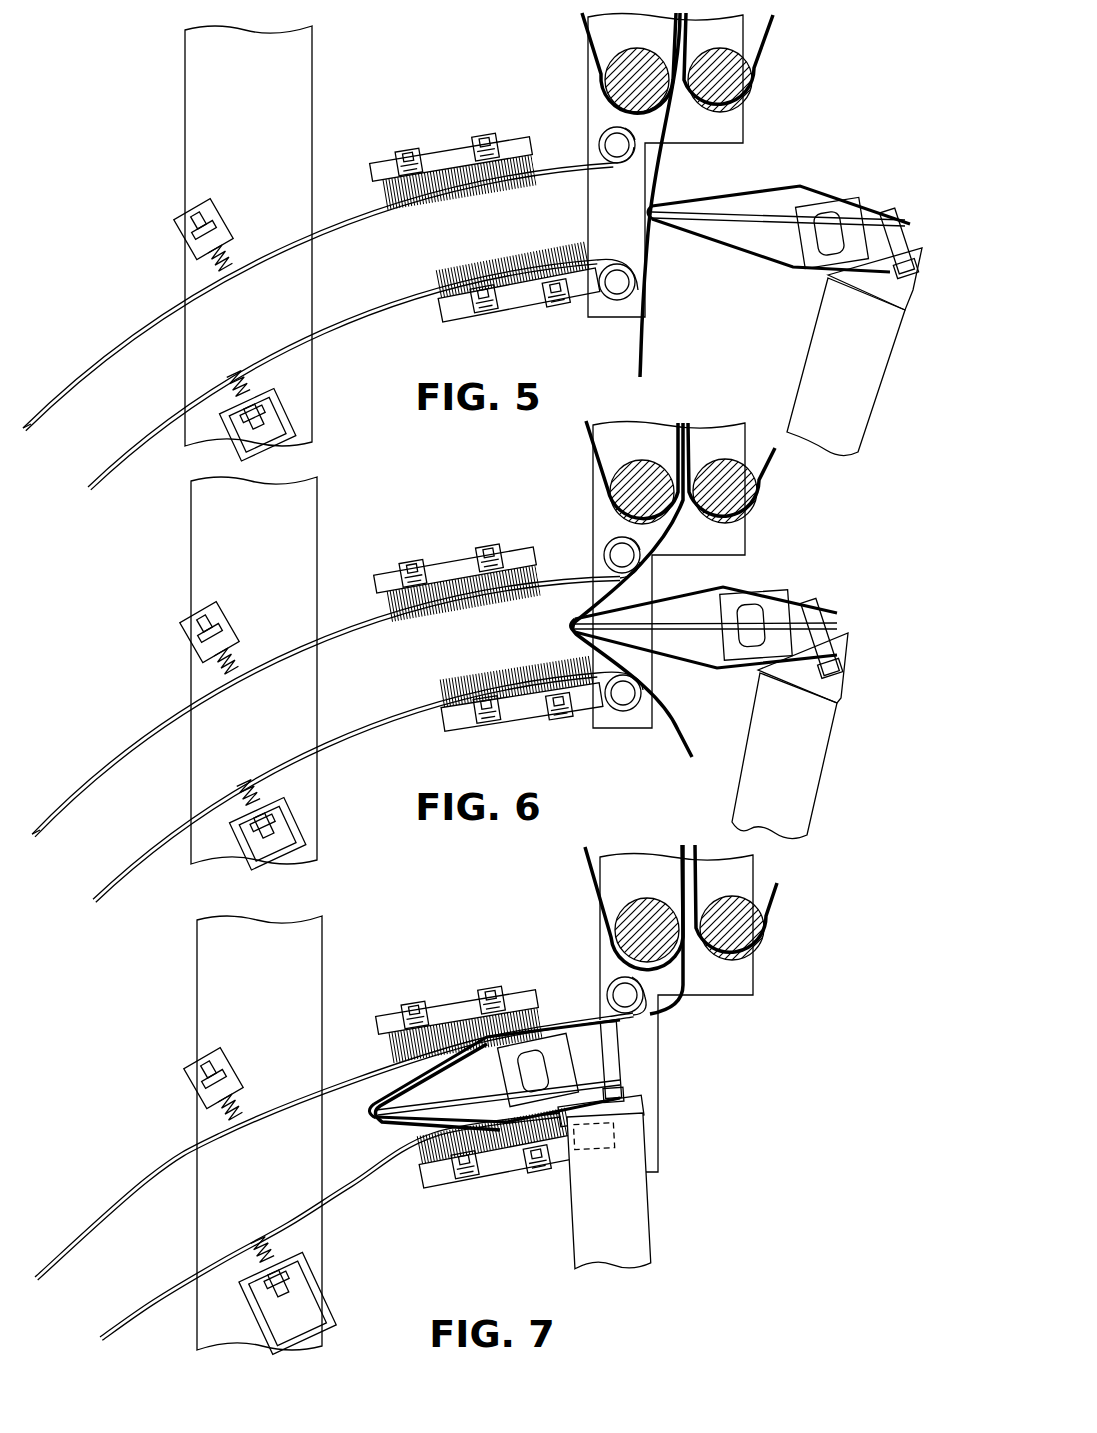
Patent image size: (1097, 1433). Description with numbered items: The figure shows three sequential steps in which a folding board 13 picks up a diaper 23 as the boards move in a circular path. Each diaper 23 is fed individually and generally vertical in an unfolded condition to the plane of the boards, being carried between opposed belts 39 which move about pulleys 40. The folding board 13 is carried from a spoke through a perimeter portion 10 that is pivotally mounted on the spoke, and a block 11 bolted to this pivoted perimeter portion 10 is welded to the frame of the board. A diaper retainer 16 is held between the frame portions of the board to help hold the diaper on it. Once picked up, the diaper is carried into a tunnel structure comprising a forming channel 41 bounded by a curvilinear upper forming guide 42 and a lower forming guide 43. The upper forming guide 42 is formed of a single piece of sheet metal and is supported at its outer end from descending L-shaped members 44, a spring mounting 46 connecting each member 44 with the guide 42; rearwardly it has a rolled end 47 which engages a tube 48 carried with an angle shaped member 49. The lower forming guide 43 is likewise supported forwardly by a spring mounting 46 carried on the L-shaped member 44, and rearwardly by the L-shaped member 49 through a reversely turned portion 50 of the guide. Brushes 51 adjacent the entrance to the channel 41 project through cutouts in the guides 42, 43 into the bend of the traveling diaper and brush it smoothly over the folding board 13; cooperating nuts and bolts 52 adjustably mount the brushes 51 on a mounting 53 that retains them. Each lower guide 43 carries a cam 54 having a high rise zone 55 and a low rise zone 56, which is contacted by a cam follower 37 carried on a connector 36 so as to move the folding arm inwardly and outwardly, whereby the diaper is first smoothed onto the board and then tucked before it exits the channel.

In FIG. 5, the perimeter portion 10 is at (825, 384).
In FIG. 6, the perimeter portion 10 is at (768, 771).
In FIG. 7, the perimeter portion 10 is at (591, 1231).
In FIG. 5, the block 11 is at (907, 275).
In FIG. 5, the folding board 13 is at (822, 182).
In FIG. 6, the folding board 13 is at (704, 627).
In FIG. 7, the folding board 13 is at (496, 1071).
In FIG. 5, the diaper retainer 16 is at (730, 227).
In FIG. 5, the diaper 23 is at (645, 330).
In FIG. 6, the diaper 23 is at (673, 728).
In FIG. 7, the diaper 23 is at (373, 1097).
In FIG. 6, the connector 36 is at (840, 625).
In FIG. 6, the cam follower 37 is at (833, 673).
In FIG. 7, the cam follower 37 is at (625, 1088).
In FIG. 5, the belts 39 is at (590, 32).
In FIG. 6, the belts 39 is at (680, 470).
In FIG. 7, the belts 39 is at (780, 902).
In FIG. 5, the pulleys 40 is at (620, 62).
In FIG. 6, the pulleys 40 is at (740, 510).
In FIG. 7, the pulleys 40 is at (740, 952).
In FIG. 5, the forming channel 41 is at (144, 397).
In FIG. 6, the forming channel 41 is at (75, 840).
In FIG. 5, the upper forming guide 42 is at (331, 219).
In FIG. 6, the upper forming guide 42 is at (151, 734).
In FIG. 7, the upper forming guide 42 is at (147, 1175).
In FIG. 5, the lower forming guide 43 is at (363, 365).
In FIG. 6, the lower forming guide 43 is at (368, 767).
In FIG. 7, the lower forming guide 43 is at (330, 1226).
In FIG. 5, the L-shaped member 44 is at (236, 110).
In FIG. 6, the L-shaped member 44 is at (238, 551).
In FIG. 7, the L-shaped member 44 is at (239, 977).
In FIG. 5, the spring mounting 46 is at (212, 215).
In FIG. 6, the spring mounting 46 is at (223, 624).
In FIG. 7, the spring mounting 46 is at (220, 1063).
In FIG. 5, the rolled end 47 is at (630, 180).
In FIG. 6, the rolled end 47 is at (622, 555).
In FIG. 7, the rolled end 47 is at (625, 995).
In FIG. 5, the tube 48 is at (600, 137).
In FIG. 5, the angle shaped member 49 is at (700, 140).
In FIG. 6, the angle shaped member 49 is at (597, 520).
In FIG. 7, the angle shaped member 49 is at (683, 988).
In FIG. 5, the reversely turned portion 50 is at (635, 317).
In FIG. 6, the reversely turned portion 50 is at (623, 693).
In FIG. 5, the brushes 51 is at (473, 200).
In FIG. 6, the brushes 51 is at (533, 543).
In FIG. 7, the brushes 51 is at (460, 1027).
In FIG. 5, the nuts and bolts 52 is at (472, 147).
In FIG. 6, the nuts and bolts 52 is at (480, 560).
In FIG. 7, the nuts and bolts 52 is at (487, 993).
In FIG. 5, the mounting 53 is at (487, 315).
In FIG. 6, the mounting 53 is at (490, 727).
In FIG. 7, the mounting 53 is at (497, 1147).
In FIG. 5, the cam 54 is at (402, 287).
In FIG. 6, the cam 54 is at (365, 718).
In FIG. 7, the cam 54 is at (353, 1160).
In FIG. 5, the high rise zone 55 is at (310, 325).
In FIG. 6, the high rise zone 55 is at (390, 687).
In FIG. 5, the low rise zone 56 is at (583, 307).